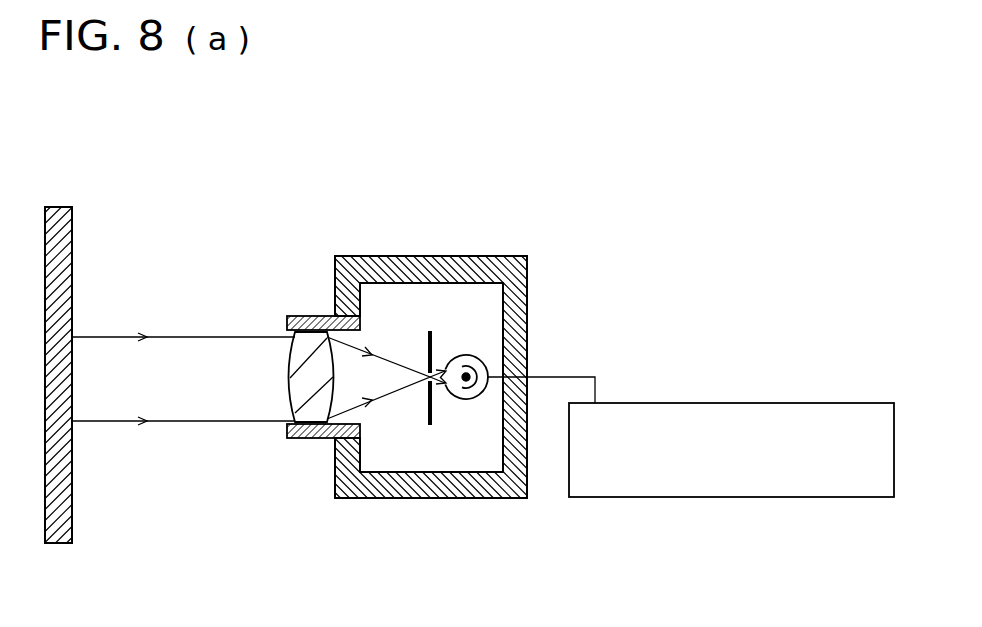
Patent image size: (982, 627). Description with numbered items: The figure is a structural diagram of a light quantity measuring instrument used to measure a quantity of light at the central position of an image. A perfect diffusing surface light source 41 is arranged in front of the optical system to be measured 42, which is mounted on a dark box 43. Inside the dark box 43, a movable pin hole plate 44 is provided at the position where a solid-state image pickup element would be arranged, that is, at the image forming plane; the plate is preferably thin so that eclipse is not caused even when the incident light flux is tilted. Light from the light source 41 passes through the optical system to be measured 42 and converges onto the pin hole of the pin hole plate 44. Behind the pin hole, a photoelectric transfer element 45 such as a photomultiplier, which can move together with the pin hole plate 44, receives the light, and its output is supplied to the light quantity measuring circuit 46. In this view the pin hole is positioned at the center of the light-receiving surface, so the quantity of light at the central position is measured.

The perfect diffusing surface light source 41 is at (72, 230).
The optical system to be measured 42 is at (305, 292).
The dark box 43 is at (435, 256).
The pin hole plate 44 is at (432, 428).
The photoelectric transfer element 45 is at (466, 355).
The light quantity measuring circuit 46 is at (614, 403).